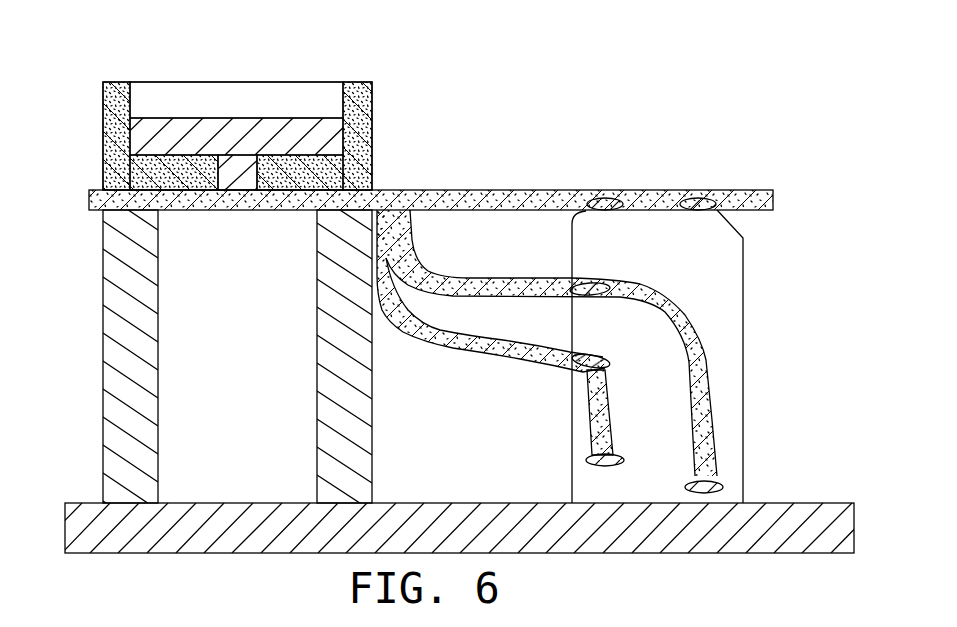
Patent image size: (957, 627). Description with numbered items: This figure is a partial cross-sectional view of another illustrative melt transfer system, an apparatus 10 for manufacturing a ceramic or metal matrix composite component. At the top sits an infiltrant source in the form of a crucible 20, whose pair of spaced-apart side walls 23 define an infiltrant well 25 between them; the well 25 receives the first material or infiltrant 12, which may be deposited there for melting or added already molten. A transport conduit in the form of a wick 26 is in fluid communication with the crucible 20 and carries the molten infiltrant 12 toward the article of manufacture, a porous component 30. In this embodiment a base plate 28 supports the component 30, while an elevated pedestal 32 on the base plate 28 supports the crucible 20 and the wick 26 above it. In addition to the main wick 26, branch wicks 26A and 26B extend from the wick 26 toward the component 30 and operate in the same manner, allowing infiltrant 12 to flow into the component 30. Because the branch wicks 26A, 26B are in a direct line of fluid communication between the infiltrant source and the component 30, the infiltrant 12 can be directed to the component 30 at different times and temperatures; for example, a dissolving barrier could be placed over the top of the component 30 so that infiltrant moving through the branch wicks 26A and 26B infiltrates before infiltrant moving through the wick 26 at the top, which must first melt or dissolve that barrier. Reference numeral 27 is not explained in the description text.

The apparatus 10 is at (697, 82).
The infiltrant 12 is at (218, 118).
The crucible 20 is at (277, 99).
The side walls 23 is at (120, 82).
The infiltrant well 25 is at (258, 98).
The wick 26 is at (255, 210).
The branch wick 26A is at (475, 353).
The branch wick 26B is at (497, 277).
The contact pads 27 is at (607, 211).
The base plate 28 is at (213, 503).
The component 30 is at (745, 335).
The elevated pedestal 32 is at (103, 305).